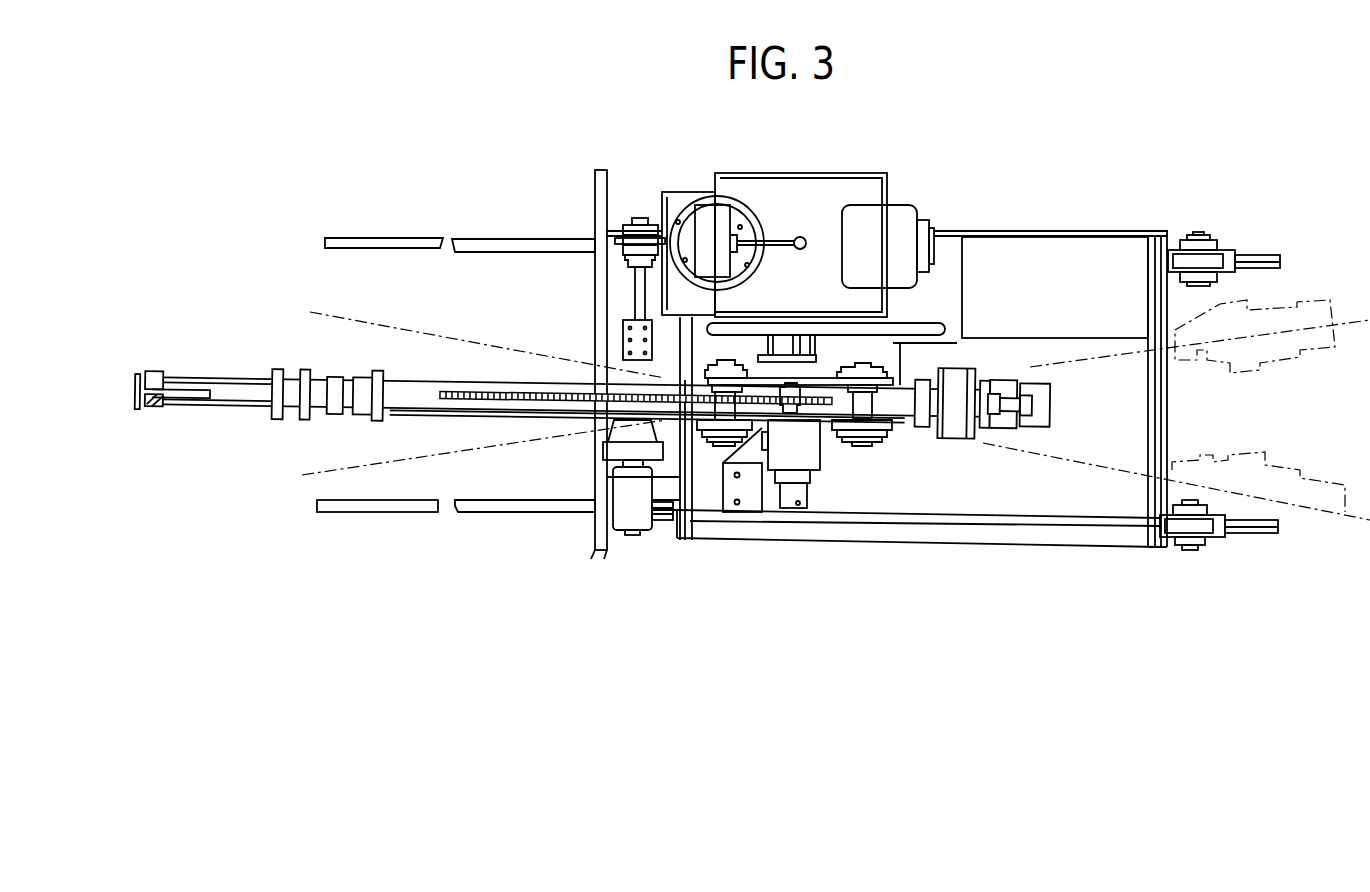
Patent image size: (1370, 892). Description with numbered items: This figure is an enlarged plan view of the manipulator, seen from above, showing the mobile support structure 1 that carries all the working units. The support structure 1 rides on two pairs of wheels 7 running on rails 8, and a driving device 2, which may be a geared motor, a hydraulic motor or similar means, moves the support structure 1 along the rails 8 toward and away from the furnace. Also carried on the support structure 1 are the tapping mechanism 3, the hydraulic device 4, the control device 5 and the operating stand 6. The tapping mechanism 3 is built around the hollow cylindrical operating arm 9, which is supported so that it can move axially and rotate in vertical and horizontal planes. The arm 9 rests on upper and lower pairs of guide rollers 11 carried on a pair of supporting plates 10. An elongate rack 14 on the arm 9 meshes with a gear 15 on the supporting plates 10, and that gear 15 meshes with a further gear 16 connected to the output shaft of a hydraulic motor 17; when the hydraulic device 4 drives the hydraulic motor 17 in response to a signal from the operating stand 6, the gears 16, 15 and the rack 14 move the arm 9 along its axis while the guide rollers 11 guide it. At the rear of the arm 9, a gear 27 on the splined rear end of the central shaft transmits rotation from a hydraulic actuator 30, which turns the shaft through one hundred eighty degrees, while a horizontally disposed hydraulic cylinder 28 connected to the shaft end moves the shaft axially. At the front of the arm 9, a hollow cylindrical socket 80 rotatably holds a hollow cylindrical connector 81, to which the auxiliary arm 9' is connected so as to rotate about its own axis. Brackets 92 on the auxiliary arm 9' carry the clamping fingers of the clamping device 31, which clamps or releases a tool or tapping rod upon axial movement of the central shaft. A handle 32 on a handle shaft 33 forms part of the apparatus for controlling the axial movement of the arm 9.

The support structure 1 is at (920, 532).
The driving device 2 is at (640, 532).
The tapping mechanism 3 is at (533, 420).
The hydraulic device 4 is at (1075, 465).
The control device 5 is at (1047, 255).
The operating stand 6 is at (873, 205).
The wheels 7 is at (1198, 258).
The rails 8 is at (405, 240).
The operating arm 9 is at (577, 354).
The auxiliary arm 9' is at (217, 429).
The supporting plates 10 is at (890, 383).
The guide rollers 11 is at (712, 372).
The rack 14 is at (517, 390).
The gear 15 is at (798, 410).
The gear 16 is at (790, 414).
The hydraulic motor 17 is at (765, 455).
The gear 27 is at (950, 443).
The hydraulic cylinder 28 is at (1003, 433).
The hydraulic actuator 30 is at (1032, 433).
The clamping device 31 is at (187, 386).
The handle 32 is at (805, 236).
The handle shaft 33 is at (778, 240).
The socket 80 is at (366, 376).
The connector 81 is at (335, 376).
The brackets 92 is at (158, 374).